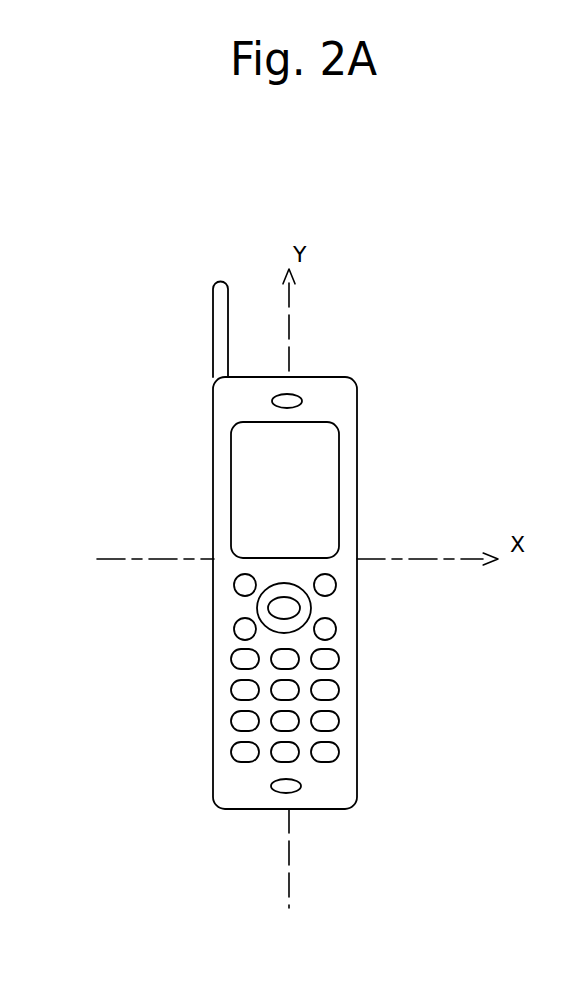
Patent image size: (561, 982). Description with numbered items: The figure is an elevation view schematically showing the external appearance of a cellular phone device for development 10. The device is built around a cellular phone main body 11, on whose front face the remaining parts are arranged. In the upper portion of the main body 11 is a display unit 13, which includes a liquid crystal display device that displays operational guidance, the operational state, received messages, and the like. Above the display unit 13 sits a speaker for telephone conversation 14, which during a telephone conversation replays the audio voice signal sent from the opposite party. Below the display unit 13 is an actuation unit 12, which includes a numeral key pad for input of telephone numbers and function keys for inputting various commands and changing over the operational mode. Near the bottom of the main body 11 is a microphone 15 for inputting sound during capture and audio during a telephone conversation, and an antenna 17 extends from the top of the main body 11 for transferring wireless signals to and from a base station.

The cellular phone device for development 10 is at (355, 265).
The cellular phone main body 11 is at (357, 443).
The actuation unit 12 is at (335, 678).
The display unit 13 is at (233, 478).
The speaker for telephone conversation 14 is at (300, 398).
The microphone 15 is at (297, 791).
The antenna 17 is at (213, 340).